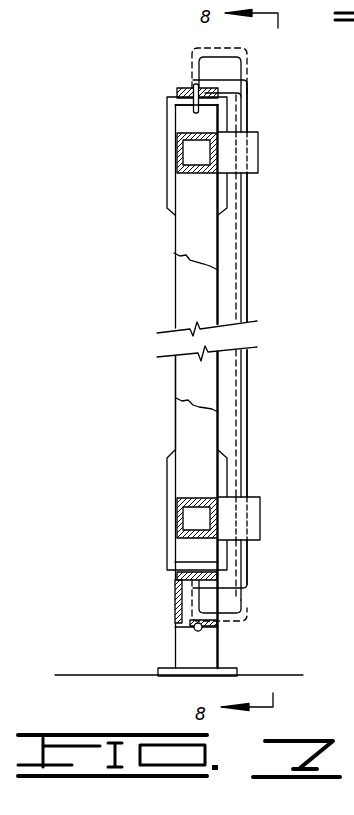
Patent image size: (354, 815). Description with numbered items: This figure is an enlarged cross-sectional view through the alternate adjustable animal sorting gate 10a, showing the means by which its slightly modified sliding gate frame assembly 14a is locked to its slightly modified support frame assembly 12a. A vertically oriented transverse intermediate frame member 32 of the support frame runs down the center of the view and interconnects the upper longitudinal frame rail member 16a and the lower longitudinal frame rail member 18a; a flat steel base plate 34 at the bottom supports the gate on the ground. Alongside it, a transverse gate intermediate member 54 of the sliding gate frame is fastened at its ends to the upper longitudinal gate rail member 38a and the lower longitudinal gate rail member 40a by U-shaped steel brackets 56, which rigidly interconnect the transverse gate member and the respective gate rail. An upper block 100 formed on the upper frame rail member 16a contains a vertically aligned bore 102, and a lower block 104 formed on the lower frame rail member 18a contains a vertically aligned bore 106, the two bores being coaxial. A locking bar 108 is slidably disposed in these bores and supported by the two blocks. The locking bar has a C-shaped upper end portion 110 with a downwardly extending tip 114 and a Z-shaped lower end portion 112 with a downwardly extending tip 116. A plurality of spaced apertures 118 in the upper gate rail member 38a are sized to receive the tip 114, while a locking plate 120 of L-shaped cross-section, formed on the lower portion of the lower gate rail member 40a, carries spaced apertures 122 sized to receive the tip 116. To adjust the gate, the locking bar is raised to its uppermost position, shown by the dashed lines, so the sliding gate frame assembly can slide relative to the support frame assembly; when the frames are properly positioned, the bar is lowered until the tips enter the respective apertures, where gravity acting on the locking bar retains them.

The adjustable animal sorting gate 10a is at (257, 95).
The support frame assembly 12a is at (174, 236).
The sliding gate frame assembly 14a is at (164, 98).
The upper longitudinal frame rail member 16a is at (192, 152).
The lower longitudinal frame rail member 18a is at (187, 510).
The transverse intermediate frame member 32 is at (203, 233).
The base plate 34 is at (225, 668).
The upper longitudinal gate rail member 38a is at (180, 90).
The lower longitudinal gate rail member 40a is at (220, 575).
The transverse gate intermediate member 54 is at (183, 370).
The U-shaped steel bracket 56 is at (168, 168).
The upper block 100 is at (260, 145).
The bore 102 is at (247, 130).
The lower block 104 is at (260, 503).
The bore 106 is at (247, 495).
The locking bar 108 is at (242, 253).
The C-shaped upper end portion 110 is at (247, 78).
The Z-shaped lower end portion 112 is at (247, 603).
The tip 114 is at (190, 113).
The tip 116 is at (197, 630).
The apertures 118 is at (195, 85).
The locking plate 120 is at (177, 595).
The apertures 122 is at (205, 627).